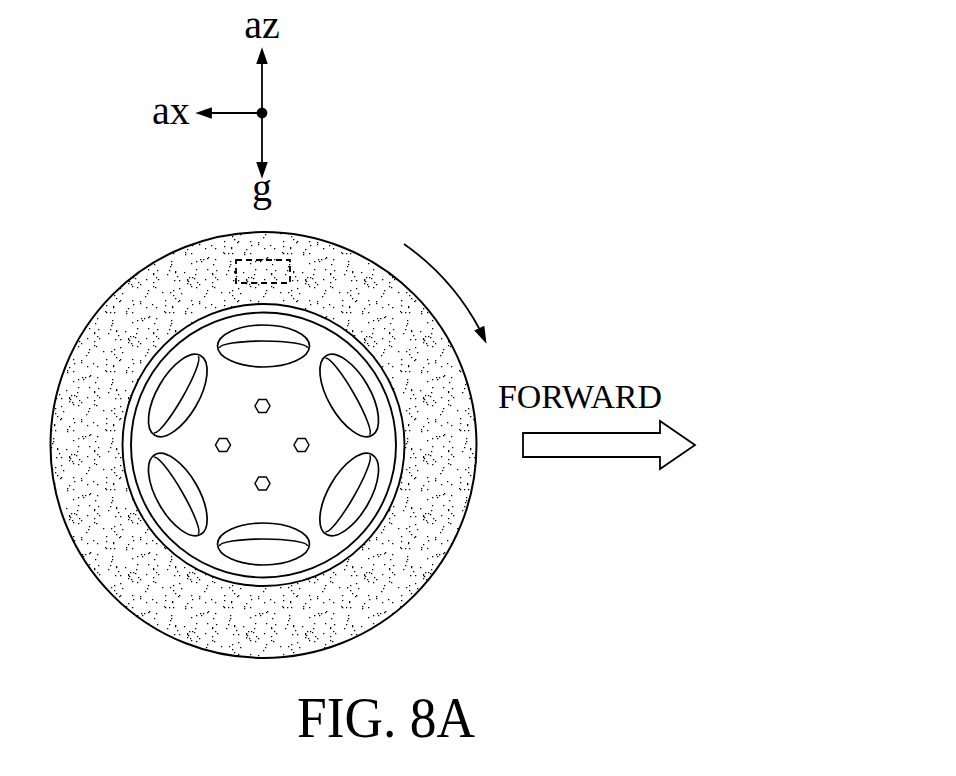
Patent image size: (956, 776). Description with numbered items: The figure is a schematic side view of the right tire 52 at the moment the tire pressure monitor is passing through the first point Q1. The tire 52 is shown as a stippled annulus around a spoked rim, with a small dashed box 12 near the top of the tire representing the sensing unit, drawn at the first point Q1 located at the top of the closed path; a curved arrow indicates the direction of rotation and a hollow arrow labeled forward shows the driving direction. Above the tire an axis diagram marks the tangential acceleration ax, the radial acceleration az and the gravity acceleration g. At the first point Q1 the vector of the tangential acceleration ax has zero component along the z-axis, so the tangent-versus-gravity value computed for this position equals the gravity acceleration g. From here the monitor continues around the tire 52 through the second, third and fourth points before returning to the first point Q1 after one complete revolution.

The right tire 52 is at (117, 325).
The sensor module 12 is at (275, 262).
The first point Q1 is at (321, 272).